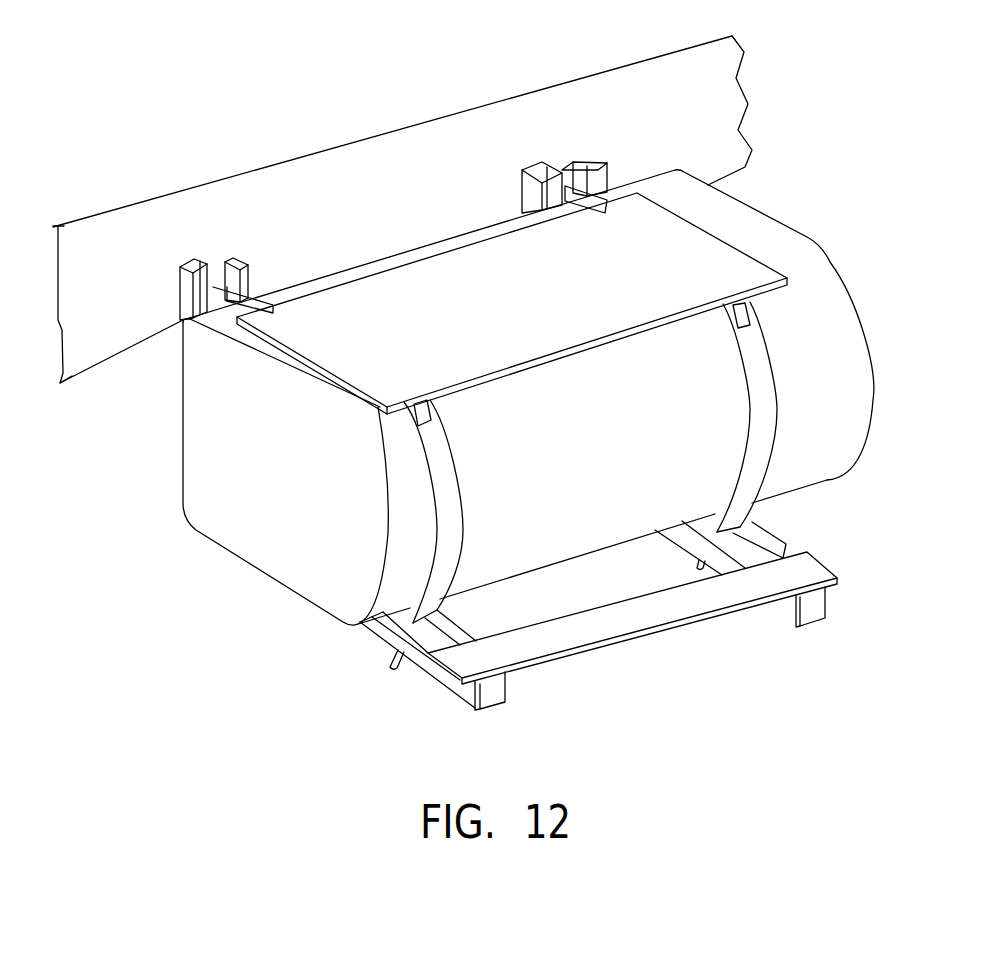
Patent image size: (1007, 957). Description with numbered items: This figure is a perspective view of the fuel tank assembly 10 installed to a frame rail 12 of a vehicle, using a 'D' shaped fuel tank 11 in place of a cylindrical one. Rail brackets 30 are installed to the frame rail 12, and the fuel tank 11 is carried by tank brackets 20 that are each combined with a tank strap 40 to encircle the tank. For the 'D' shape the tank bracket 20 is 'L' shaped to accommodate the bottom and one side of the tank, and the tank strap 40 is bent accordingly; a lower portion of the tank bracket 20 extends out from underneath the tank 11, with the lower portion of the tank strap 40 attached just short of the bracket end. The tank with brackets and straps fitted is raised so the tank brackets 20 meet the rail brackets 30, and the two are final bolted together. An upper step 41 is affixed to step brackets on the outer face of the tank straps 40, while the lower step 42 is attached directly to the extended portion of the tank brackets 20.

The fuel tank assembly 10 is at (901, 701).
The fuel tank 11 is at (284, 522).
The frame rail 12 is at (368, 172).
The tank bracket 20 is at (252, 248).
The rail bracket 30 is at (186, 250).
The tank strap 40 is at (458, 498).
The upper step 41 is at (481, 313).
The lower step 42 is at (643, 618).